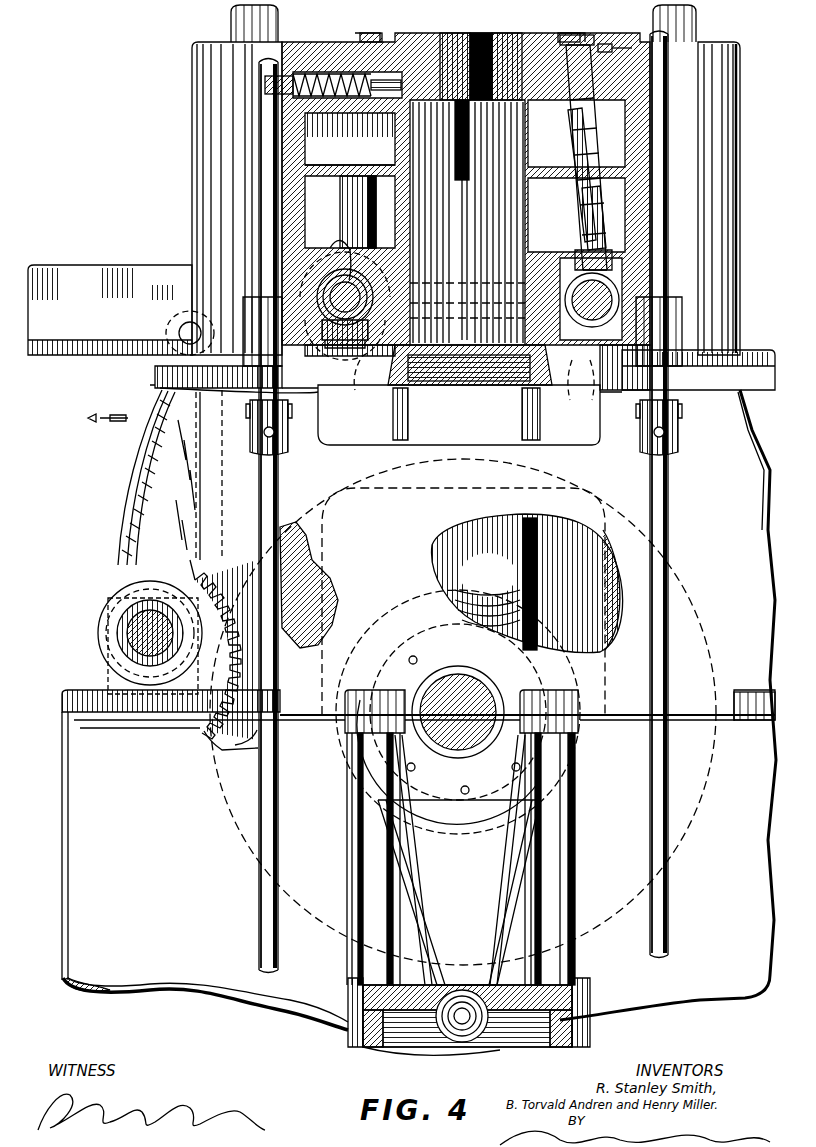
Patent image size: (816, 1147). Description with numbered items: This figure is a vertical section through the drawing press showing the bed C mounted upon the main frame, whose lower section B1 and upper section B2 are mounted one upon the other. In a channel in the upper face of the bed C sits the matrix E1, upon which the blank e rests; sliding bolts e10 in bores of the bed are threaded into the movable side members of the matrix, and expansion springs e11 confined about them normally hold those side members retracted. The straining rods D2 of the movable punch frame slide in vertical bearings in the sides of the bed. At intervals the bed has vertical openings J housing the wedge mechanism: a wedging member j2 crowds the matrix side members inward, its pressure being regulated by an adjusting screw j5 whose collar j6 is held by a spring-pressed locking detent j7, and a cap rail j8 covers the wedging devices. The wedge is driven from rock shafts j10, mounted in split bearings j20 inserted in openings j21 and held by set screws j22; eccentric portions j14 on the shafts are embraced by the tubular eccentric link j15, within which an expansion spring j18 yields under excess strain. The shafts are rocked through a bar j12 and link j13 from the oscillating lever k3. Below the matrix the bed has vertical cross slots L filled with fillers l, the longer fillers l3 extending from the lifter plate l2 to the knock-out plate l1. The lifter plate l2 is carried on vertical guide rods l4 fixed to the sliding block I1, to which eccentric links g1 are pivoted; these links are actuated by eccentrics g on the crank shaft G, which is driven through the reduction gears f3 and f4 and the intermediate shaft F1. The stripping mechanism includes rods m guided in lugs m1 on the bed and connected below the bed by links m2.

The straining rods D2 is at (710, 22).
The bed C is at (210, 135).
The rods m is at (259, 157).
The sliding bolts e10 is at (270, 86).
The expansion springs e11 is at (312, 72).
The matrix E1 is at (540, 22).
The eccentric link j15 is at (606, 203).
The openings j21 is at (348, 280).
The vertical cross slots L is at (412, 248).
The fillers l is at (490, 222).
The knock-out plate l1 is at (455, 36).
The blank e is at (475, 36).
The fillers of greater length l3 is at (500, 36).
The vertical openings J is at (600, 48).
The wedging member j2 is at (586, 35).
The collar j6 is at (612, 46).
The locking detent j7 is at (628, 47).
The cap rail j8 is at (370, 33).
The adjusting screw j5 is at (596, 128).
The expansion spring j18 is at (576, 258).
The eccentric portions j14 is at (600, 275).
The split bearings j20 is at (322, 290).
The lifter plate l2 is at (432, 430).
The set screws j22 is at (330, 356).
The rock shafts j10 is at (570, 370).
The bar j12 is at (604, 384).
The link j13 is at (224, 325).
The lugs m1 is at (746, 290).
The oscillating lever k3 is at (140, 466).
The reduction gear f3 is at (100, 602).
The intermediate shaft F1 is at (118, 645).
The lower frame section B1 is at (205, 860).
The upper frame section B2 is at (668, 705).
The links m2 is at (720, 648).
The reduction gear f4 is at (334, 598).
The eccentrics g is at (478, 612).
The crank shaft G is at (412, 740).
The vertical guide rods l4 is at (510, 948).
The eccentric links g1 is at (459, 892).
The sliding block I1 is at (532, 1035).